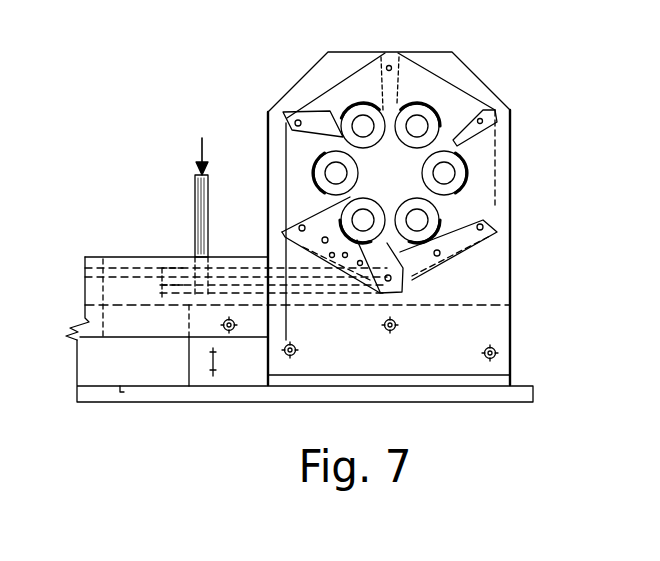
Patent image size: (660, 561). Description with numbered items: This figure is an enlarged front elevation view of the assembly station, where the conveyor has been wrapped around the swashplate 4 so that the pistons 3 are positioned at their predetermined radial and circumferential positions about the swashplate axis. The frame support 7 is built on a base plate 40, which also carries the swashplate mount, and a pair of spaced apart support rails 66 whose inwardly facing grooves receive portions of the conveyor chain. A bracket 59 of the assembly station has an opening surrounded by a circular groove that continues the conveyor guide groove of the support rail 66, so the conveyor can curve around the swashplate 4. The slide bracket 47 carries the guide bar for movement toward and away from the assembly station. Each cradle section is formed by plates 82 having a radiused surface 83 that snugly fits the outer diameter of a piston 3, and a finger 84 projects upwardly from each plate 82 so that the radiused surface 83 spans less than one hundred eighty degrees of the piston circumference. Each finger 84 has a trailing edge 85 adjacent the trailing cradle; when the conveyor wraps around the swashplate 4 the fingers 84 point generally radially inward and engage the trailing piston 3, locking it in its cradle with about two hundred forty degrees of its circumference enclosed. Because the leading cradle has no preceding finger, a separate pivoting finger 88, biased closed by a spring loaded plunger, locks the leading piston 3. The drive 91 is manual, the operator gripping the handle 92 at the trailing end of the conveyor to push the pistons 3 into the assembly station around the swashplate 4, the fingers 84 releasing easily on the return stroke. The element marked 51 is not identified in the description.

The piston 3 is at (338, 132).
The swashplate 4 is at (380, 170).
The frame support 7 is at (300, 121).
The base plate 40 is at (92, 405).
The slide bracket 47 is at (502, 118).
The cylinder 51 is at (455, 189).
The bracket 59 is at (473, 75).
The support rail 66 is at (122, 257).
The plate 82 is at (338, 85).
The radiused surface 83 is at (361, 109).
The finger 84 is at (388, 110).
The trailing edge 85 is at (396, 104).
The pivoting finger 88 is at (372, 228).
The drive 91 is at (202, 144).
The handle 92 is at (194, 177).